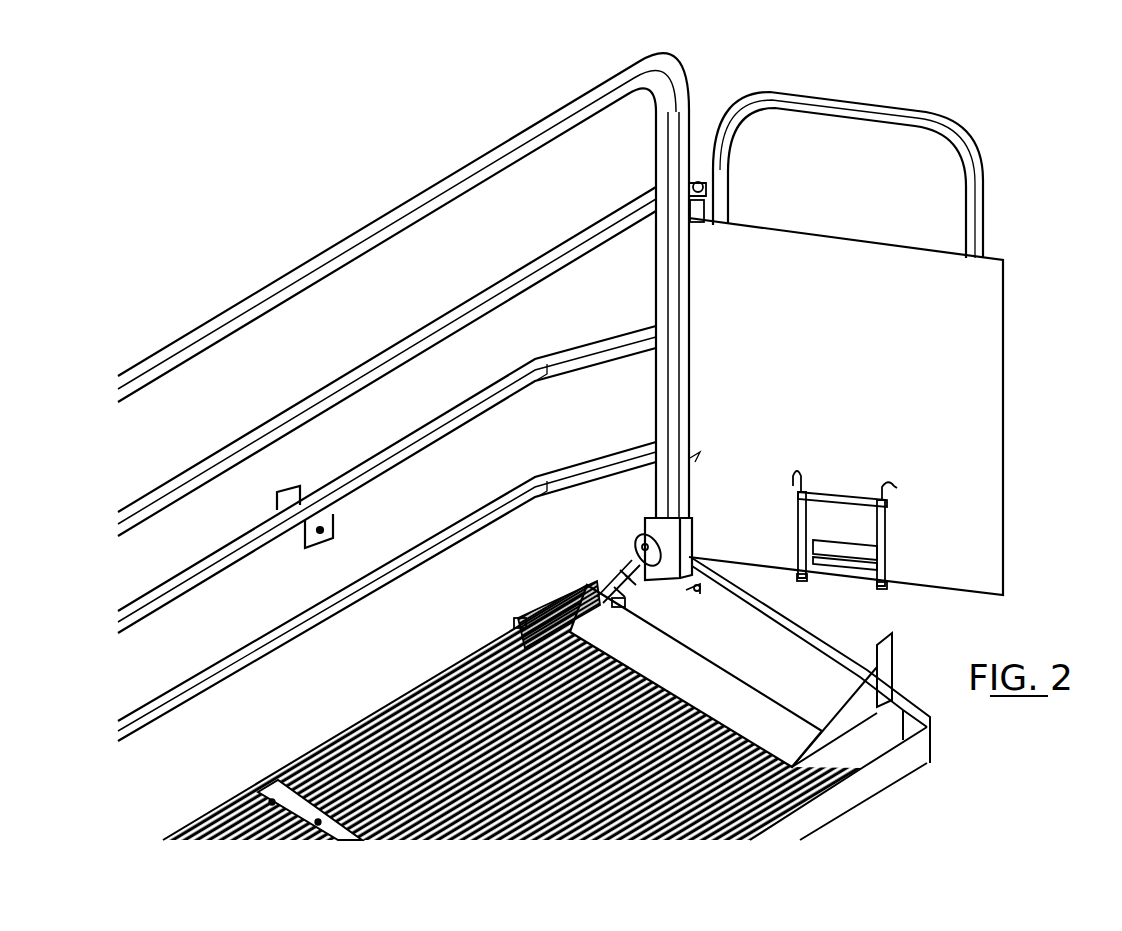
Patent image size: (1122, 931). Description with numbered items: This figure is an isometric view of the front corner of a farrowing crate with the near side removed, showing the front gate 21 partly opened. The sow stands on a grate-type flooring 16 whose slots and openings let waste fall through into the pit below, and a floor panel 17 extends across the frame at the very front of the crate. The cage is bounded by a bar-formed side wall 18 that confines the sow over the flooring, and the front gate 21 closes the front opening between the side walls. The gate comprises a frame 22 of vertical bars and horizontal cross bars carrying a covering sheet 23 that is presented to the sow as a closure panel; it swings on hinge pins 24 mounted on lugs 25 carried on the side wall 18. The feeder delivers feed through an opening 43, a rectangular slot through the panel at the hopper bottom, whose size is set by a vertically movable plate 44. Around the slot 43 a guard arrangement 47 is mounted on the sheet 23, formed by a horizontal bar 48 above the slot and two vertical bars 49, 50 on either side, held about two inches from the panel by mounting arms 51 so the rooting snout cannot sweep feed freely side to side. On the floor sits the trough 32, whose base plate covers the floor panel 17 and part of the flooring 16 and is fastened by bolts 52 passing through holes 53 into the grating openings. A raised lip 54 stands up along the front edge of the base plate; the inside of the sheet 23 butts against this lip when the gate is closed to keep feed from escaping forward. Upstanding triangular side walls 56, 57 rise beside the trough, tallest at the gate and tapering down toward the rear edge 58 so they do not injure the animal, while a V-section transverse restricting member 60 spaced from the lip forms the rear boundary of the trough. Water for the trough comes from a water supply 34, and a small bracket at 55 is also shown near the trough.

The flooring 16 is at (797, 797).
The floor panel 17 is at (933, 724).
The side wall 18 is at (588, 95).
The front gate 21 is at (872, 78).
The frame 22 is at (975, 213).
The covering sheet 23 is at (990, 330).
The hinge pin 24 is at (698, 182).
The lug 25 is at (697, 217).
The trough 32 is at (607, 590).
The water supply 34 is at (641, 524).
The opening 43 is at (845, 568).
The plate 44 is at (860, 555).
The guard arrangement 47 is at (826, 536).
The horizontal bar 48 is at (812, 500).
The vertical bar 49 is at (798, 517).
The vertical bar 50 is at (886, 522).
The mounting arm 51 is at (793, 476).
The bolt 52 is at (548, 607).
The hole 53 is at (520, 622).
The raised lip 54 is at (693, 590).
The link end 55 is at (640, 596).
The side wall 56 is at (634, 538).
The side wall 57 is at (847, 717).
The rear edge 58 is at (690, 718).
The transverse restricting member 60 is at (578, 595).